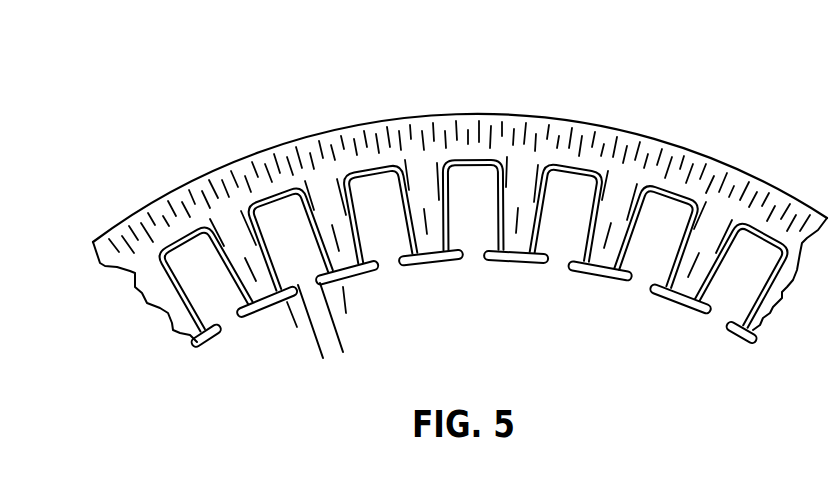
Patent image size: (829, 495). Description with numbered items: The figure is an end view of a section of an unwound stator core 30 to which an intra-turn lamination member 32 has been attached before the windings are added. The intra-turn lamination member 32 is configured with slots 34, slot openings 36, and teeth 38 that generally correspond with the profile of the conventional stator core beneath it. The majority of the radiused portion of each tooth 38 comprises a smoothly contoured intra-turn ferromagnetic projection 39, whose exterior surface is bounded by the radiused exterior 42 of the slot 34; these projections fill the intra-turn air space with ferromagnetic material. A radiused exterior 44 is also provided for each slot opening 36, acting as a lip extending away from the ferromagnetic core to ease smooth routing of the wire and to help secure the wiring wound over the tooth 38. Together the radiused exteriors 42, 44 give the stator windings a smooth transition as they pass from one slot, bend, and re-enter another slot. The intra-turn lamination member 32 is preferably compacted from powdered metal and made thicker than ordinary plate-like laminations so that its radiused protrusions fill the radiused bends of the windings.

The stator core 30 is at (138, 119).
The intra-turn lamination member 32 is at (407, 112).
The slot 34 is at (352, 304).
The slot opening 36 is at (350, 341).
The tooth 38 is at (433, 283).
The intra-turn ferromagnetic projection 39 is at (455, 171).
The radiused exterior of slot 42 is at (674, 259).
The radiused exterior of slot opening 44 is at (668, 280).